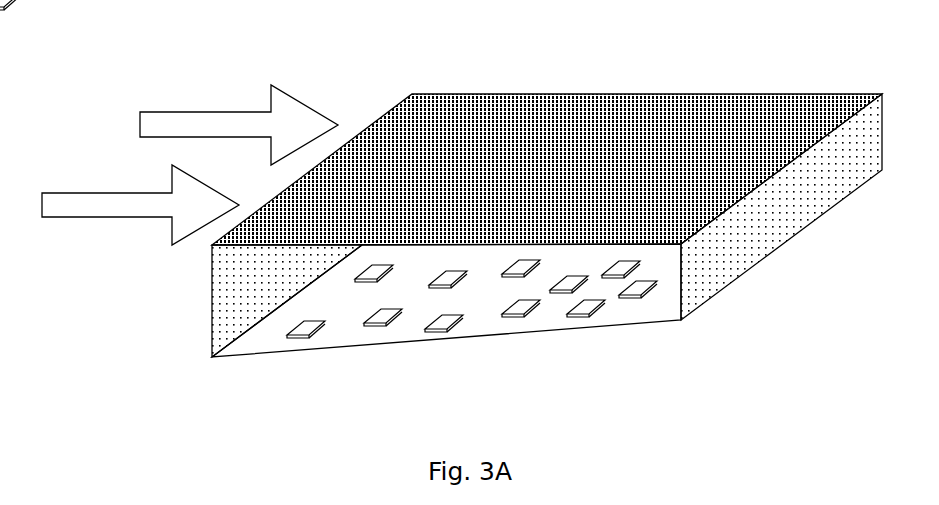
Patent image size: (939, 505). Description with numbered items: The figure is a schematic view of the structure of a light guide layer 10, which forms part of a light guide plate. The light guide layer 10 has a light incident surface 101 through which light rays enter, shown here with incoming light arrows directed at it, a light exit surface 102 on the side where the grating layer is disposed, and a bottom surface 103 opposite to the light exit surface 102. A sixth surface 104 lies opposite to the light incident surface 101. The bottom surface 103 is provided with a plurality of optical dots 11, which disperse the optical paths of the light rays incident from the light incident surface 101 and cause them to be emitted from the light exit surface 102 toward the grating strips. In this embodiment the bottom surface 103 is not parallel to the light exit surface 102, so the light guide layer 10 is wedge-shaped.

The light guide layer 10 is at (442, 211).
The light incident surface 101 is at (232, 280).
The light exit surface 102 is at (743, 125).
The bottom surface 103 is at (265, 345).
The sixth surface 104 is at (765, 234).
The optical dots 11 is at (449, 333).